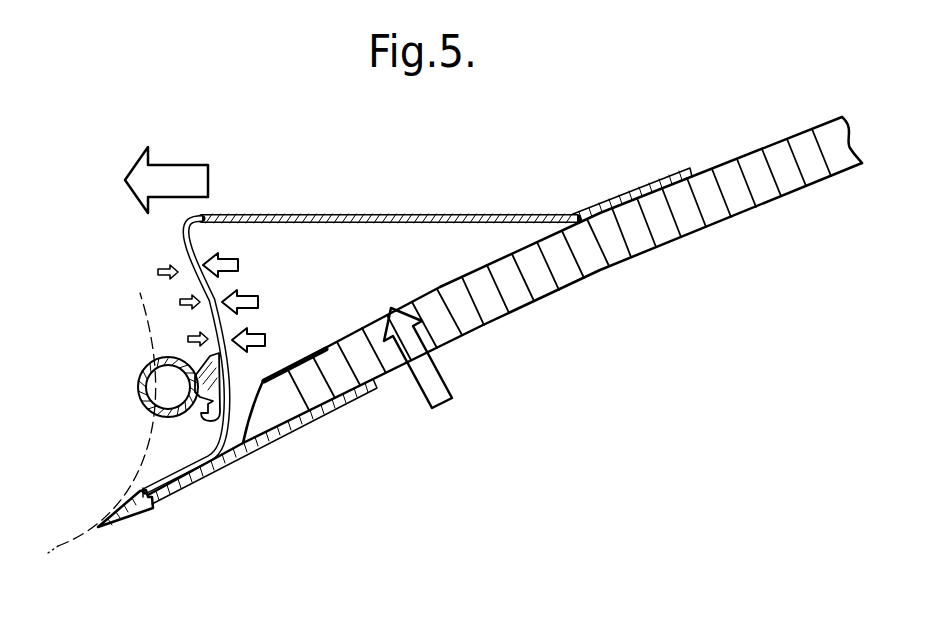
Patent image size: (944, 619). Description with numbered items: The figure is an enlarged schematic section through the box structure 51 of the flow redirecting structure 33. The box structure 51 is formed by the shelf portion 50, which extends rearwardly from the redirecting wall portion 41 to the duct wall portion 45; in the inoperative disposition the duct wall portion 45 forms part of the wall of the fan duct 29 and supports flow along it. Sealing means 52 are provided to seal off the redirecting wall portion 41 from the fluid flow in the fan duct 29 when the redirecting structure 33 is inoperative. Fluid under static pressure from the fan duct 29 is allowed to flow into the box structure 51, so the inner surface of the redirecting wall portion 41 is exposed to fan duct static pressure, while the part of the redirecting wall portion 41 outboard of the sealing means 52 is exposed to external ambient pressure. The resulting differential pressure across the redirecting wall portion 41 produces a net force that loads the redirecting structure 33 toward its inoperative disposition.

The fan duct 29 is at (350, 481).
The redirecting structure 33 is at (580, 177).
The redirecting wall portion 41 is at (184, 252).
The duct wall portion 45 is at (571, 288).
The shelf portion 50 is at (373, 213).
The box structure 51 is at (400, 281).
The sealing means 52 is at (139, 385).